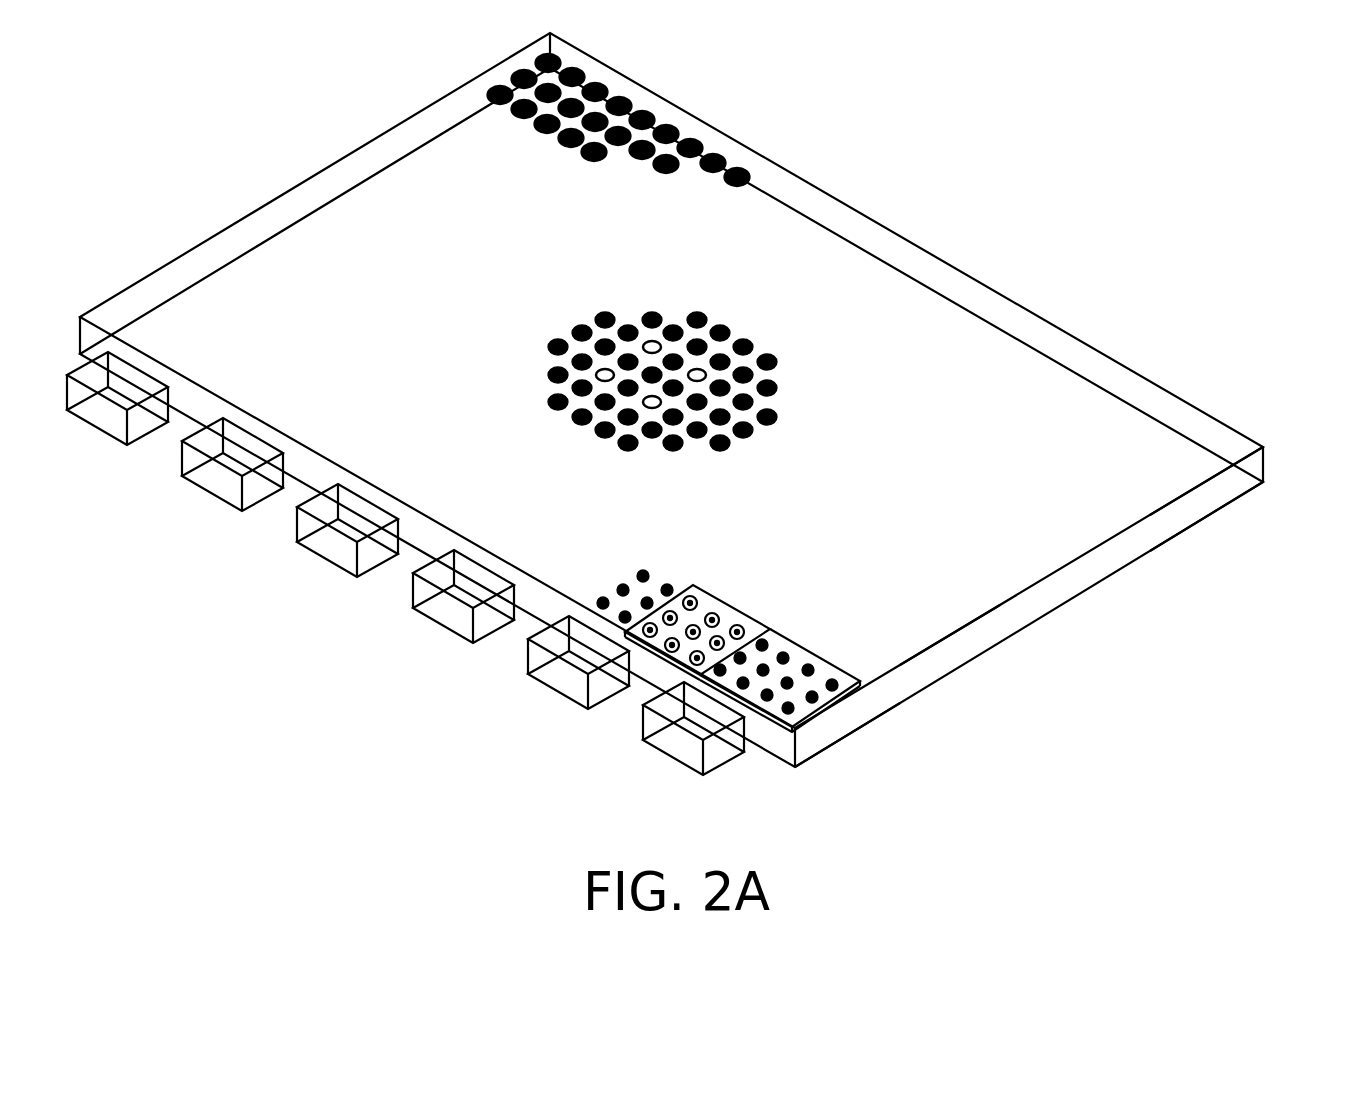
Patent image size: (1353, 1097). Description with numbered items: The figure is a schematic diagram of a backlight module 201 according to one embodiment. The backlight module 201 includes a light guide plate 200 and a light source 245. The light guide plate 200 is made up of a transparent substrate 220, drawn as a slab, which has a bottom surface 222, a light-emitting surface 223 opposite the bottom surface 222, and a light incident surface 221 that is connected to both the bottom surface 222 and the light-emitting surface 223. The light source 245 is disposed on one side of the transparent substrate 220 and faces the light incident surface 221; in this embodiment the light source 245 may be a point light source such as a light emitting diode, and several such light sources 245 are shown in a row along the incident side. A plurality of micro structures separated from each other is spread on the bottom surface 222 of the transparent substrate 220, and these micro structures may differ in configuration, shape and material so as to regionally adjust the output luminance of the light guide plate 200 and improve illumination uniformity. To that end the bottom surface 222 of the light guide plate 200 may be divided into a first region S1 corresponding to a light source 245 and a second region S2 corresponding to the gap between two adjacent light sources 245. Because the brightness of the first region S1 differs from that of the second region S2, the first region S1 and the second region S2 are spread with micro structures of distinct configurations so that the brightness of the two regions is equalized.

The light guide plate 200 is at (923, 208).
The backlight module 201 is at (1222, 228).
The transparent substrate 220 is at (947, 615).
The light incident surface 221 is at (810, 762).
The bottom surface 222 is at (1188, 493).
The light-emitting surface 223 is at (1188, 532).
The light source 245 is at (565, 687).
The first region S1 is at (823, 650).
The second region S2 is at (738, 605).